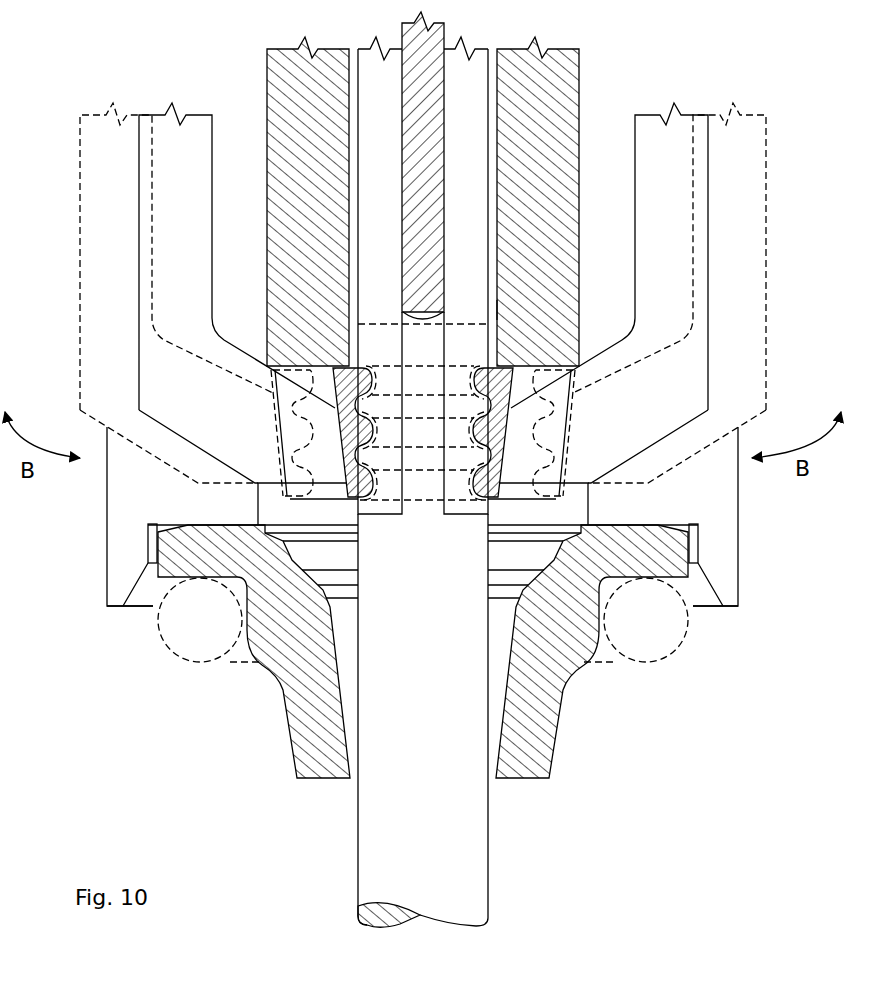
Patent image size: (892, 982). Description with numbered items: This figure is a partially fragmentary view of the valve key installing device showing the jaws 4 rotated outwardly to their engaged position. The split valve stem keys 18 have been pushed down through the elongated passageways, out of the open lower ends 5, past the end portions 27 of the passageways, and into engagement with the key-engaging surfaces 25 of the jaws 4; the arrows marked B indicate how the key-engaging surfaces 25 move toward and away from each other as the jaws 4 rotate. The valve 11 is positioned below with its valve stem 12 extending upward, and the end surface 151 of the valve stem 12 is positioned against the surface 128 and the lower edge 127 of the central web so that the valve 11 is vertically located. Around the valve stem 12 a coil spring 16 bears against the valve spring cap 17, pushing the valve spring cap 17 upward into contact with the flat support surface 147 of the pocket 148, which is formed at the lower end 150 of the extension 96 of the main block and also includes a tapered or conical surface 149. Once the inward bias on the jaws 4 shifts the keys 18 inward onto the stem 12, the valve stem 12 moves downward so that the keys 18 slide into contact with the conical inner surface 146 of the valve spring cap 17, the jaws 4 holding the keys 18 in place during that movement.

The jaw 4 is at (139, 207).
The open lower end 5 is at (266, 254).
The valve 11 is at (490, 858).
The valve stem 12 is at (365, 840).
The coil spring 16 is at (648, 662).
The valve spring cap 17 is at (555, 746).
The valve stem key 18 is at (272, 393).
The key-engaging surface 25 is at (300, 485).
The end portion of elongated passageway 27 is at (266, 189).
The lower housing 96 is at (105, 583).
The lower edge of central web 127 is at (464, 313).
The inner surface of prong 128 is at (497, 308).
The conical inner surface of valve spring cap 146 is at (346, 680).
The flat support surface 147 is at (148, 565).
The pocket 148 is at (693, 598).
The conical surface 149 is at (142, 607).
The lower end of extension 150 is at (118, 606).
The end surface of valve stem 151 is at (405, 316).